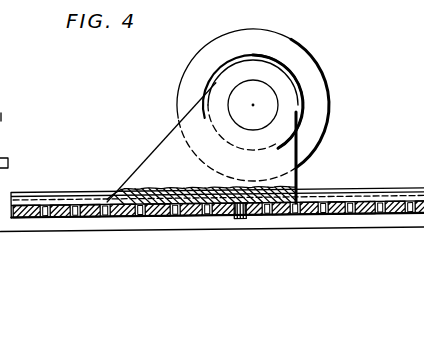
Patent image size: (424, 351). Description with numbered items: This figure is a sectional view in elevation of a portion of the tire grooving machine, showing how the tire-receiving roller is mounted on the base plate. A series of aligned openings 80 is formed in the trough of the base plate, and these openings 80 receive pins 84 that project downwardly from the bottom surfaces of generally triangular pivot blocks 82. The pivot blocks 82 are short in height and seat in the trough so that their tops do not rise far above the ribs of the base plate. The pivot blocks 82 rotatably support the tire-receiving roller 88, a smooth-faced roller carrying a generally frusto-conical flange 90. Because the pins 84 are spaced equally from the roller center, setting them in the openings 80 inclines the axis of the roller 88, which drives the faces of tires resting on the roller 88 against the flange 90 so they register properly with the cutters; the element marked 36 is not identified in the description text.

The carrier tape 36 is at (65, 192).
The openings 80 is at (136, 220).
The pivot block 82 is at (176, 145).
The pin 84 is at (241, 222).
The tire-receiving roller 88 is at (240, 57).
The frusto-conical flange 90 is at (312, 62).